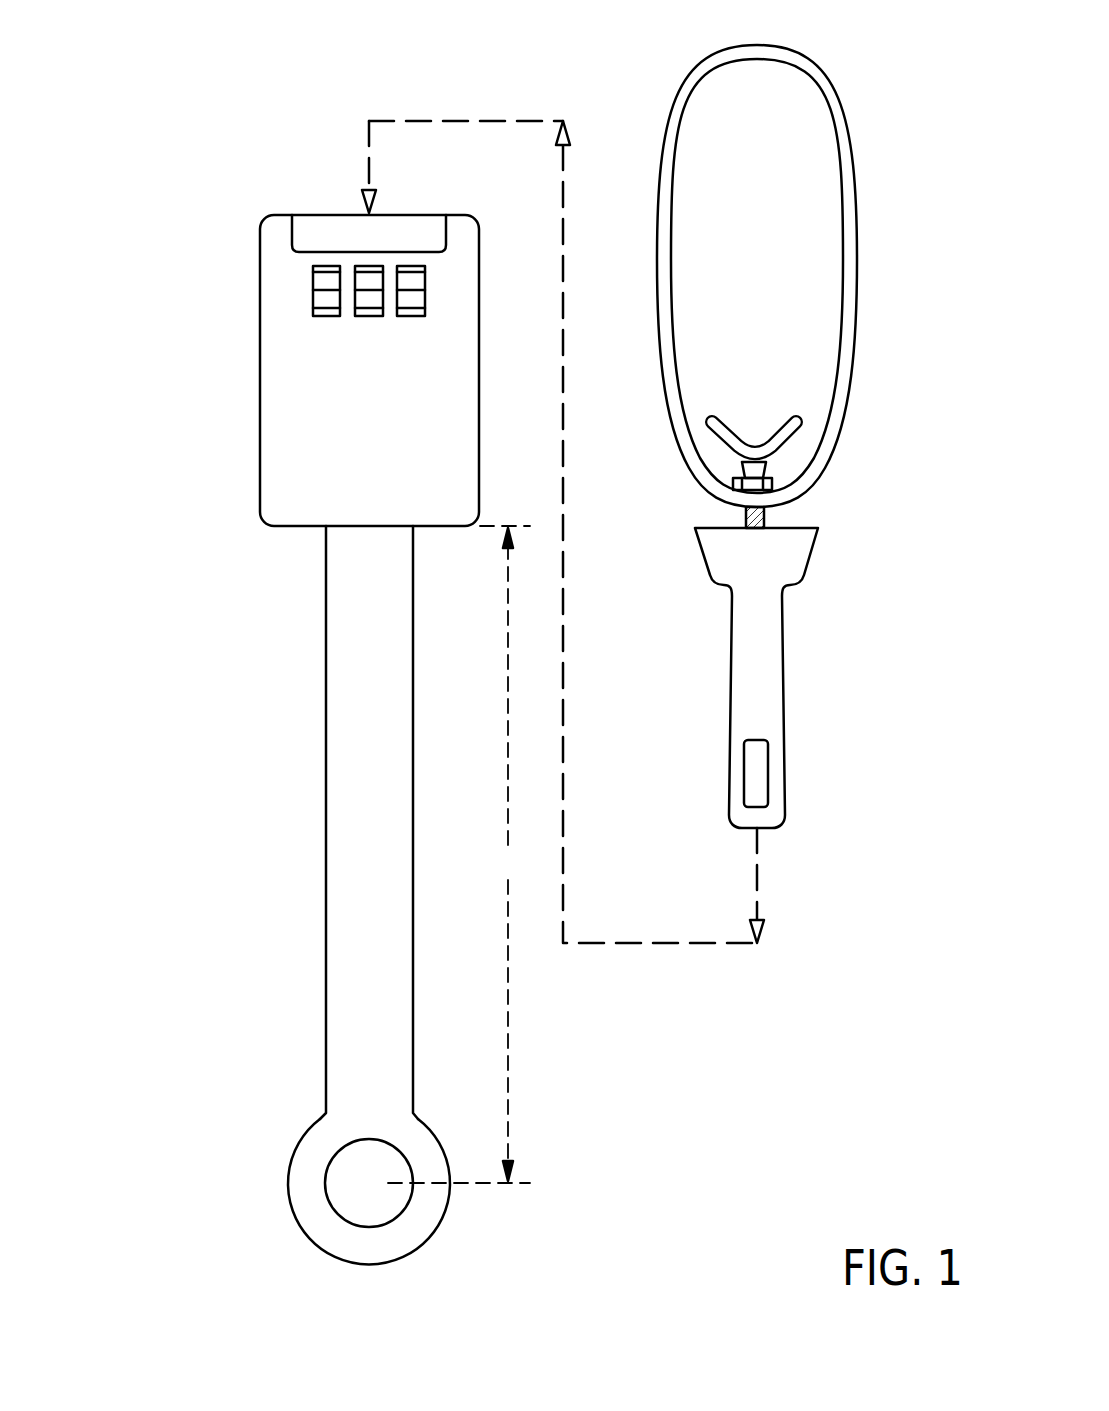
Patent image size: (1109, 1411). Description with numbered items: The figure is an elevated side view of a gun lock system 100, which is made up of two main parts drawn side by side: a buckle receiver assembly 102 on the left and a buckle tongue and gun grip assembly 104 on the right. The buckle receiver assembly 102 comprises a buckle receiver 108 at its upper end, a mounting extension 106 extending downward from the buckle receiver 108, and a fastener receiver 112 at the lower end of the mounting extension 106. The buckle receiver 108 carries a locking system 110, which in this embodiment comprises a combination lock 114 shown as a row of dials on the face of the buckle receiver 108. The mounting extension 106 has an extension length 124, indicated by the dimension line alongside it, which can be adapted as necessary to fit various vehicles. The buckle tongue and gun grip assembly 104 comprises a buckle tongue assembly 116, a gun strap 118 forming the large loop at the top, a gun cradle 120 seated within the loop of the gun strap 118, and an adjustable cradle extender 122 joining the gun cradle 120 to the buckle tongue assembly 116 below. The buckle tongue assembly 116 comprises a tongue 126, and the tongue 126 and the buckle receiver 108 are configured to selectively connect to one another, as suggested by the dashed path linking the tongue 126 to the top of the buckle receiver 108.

The gun lock system 100 is at (236, 137).
The buckle receiver assembly 102 is at (286, 830).
The buckle tongue and gun grip assembly 104 is at (832, 696).
The mounting extension 106 is at (326, 740).
The buckle receiver 108 is at (305, 433).
The locking system 110 is at (313, 290).
The fastener receiver 112 is at (368, 1182).
The combination lock 114 is at (369, 291).
The buckle tongue assembly 116 is at (714, 660).
The gun strap 118 is at (808, 62).
The gun cradle 120 is at (780, 450).
The adjustable cradle extender 122 is at (743, 521).
The extension length 124 is at (459, 854).
The tongue 126 is at (760, 657).